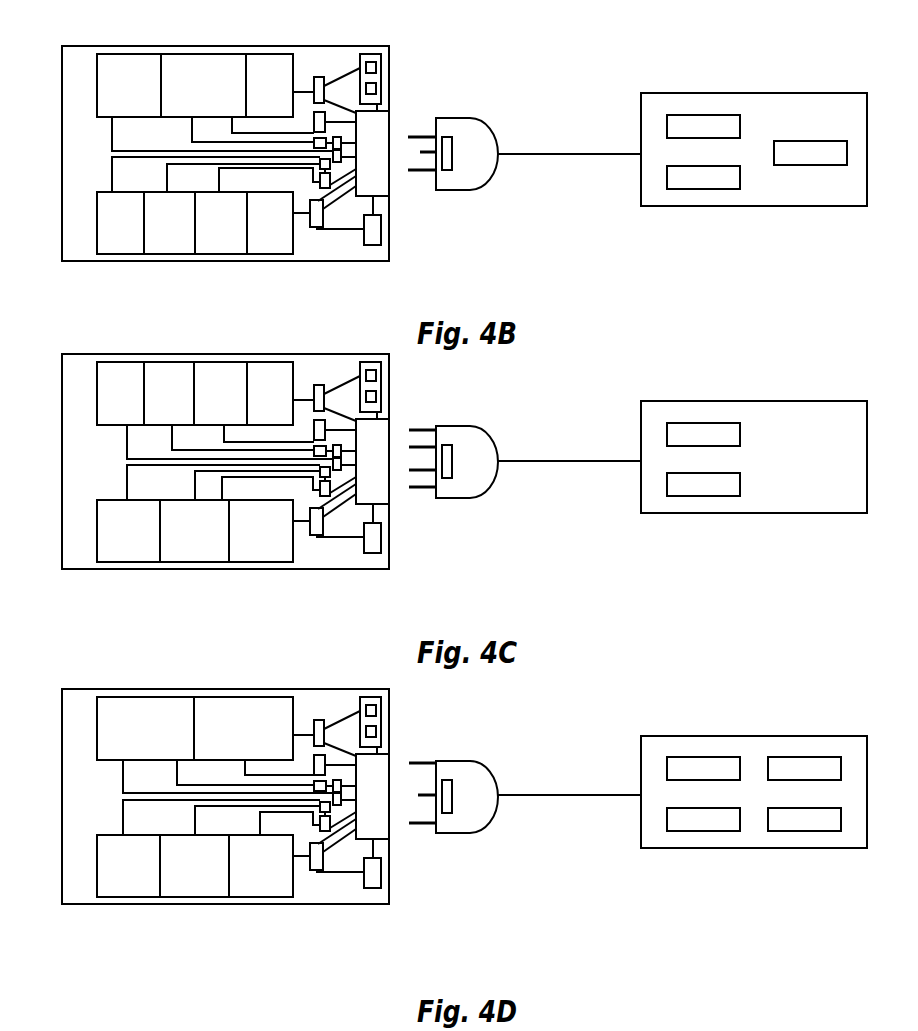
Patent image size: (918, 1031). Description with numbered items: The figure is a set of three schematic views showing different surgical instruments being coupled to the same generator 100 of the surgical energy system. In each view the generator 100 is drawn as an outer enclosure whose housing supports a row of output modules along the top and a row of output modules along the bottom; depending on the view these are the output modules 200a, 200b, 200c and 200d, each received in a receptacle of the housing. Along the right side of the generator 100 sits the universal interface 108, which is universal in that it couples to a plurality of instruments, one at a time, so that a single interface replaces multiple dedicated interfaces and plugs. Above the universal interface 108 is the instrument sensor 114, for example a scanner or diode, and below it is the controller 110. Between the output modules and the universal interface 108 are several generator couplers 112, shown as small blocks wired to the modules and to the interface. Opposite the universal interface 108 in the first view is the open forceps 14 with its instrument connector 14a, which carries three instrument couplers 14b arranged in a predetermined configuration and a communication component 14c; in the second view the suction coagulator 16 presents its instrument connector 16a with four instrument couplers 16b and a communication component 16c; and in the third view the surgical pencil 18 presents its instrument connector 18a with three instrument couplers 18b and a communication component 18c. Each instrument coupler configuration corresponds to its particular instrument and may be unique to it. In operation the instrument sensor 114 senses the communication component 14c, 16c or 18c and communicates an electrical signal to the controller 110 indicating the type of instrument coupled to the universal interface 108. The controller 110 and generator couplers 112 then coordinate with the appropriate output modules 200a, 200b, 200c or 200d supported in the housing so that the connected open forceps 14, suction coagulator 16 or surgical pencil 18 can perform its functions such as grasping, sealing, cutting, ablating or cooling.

In FIG. 4B, the generator 100 is at (185, 46).
In FIG. 4C, the generator 100 is at (225, 432).
In FIG. 4D, the generator 100 is at (225, 767).
In FIG. 4B, the universal interface 108 is at (392, 120).
In FIG. 4C, the universal interface 108 is at (401, 449).
In FIG. 4D, the universal interface 108 is at (400, 809).
In FIG. 4B, the controller 110 is at (381, 228).
In FIG. 4C, the controller 110 is at (407, 550).
In FIG. 4D, the controller 110 is at (374, 910).
In FIG. 4B, the generator couplers 112 is at (317, 229).
In FIG. 4C, the generator couplers 112 is at (314, 561).
In FIG. 4D, the generator couplers 112 is at (323, 756).
In FIG. 4B, the instrument sensor 114 is at (372, 54).
In FIG. 4C, the instrument sensor 114 is at (373, 351).
In FIG. 4D, the instrument sensor 114 is at (373, 687).
In FIG. 4D, the output module 200a is at (195, 699).
In FIG. 4B, the output module 200b is at (105, 80).
In FIG. 4B, the output module 200c is at (110, 220).
In FIG. 4C, the output module 200c is at (195, 362).
In FIG. 4C, the output module 200d is at (195, 556).
In FIG. 4D, the output module 200d is at (195, 897).
In FIG. 4B, the open forceps 14 is at (754, 93).
In FIG. 4B, the instrument connector 14a is at (490, 127).
In FIG. 4B, the instrument couplers 14b is at (417, 177).
In FIG. 4B, the communication component 14c is at (452, 158).
In FIG. 4C, the suction coagulator 16 is at (754, 429).
In FIG. 4C, the instrument connector 16a is at (468, 437).
In FIG. 4C, the instrument couplers 16b is at (423, 490).
In FIG. 4C, the communication component 16c is at (491, 469).
In FIG. 4D, the surgical pencil 18 is at (754, 760).
In FIG. 4D, the instrument connector 18a is at (468, 768).
In FIG. 4D, the instrument couplers 18b is at (423, 763).
In FIG. 4D, the communication component 18c is at (492, 806).